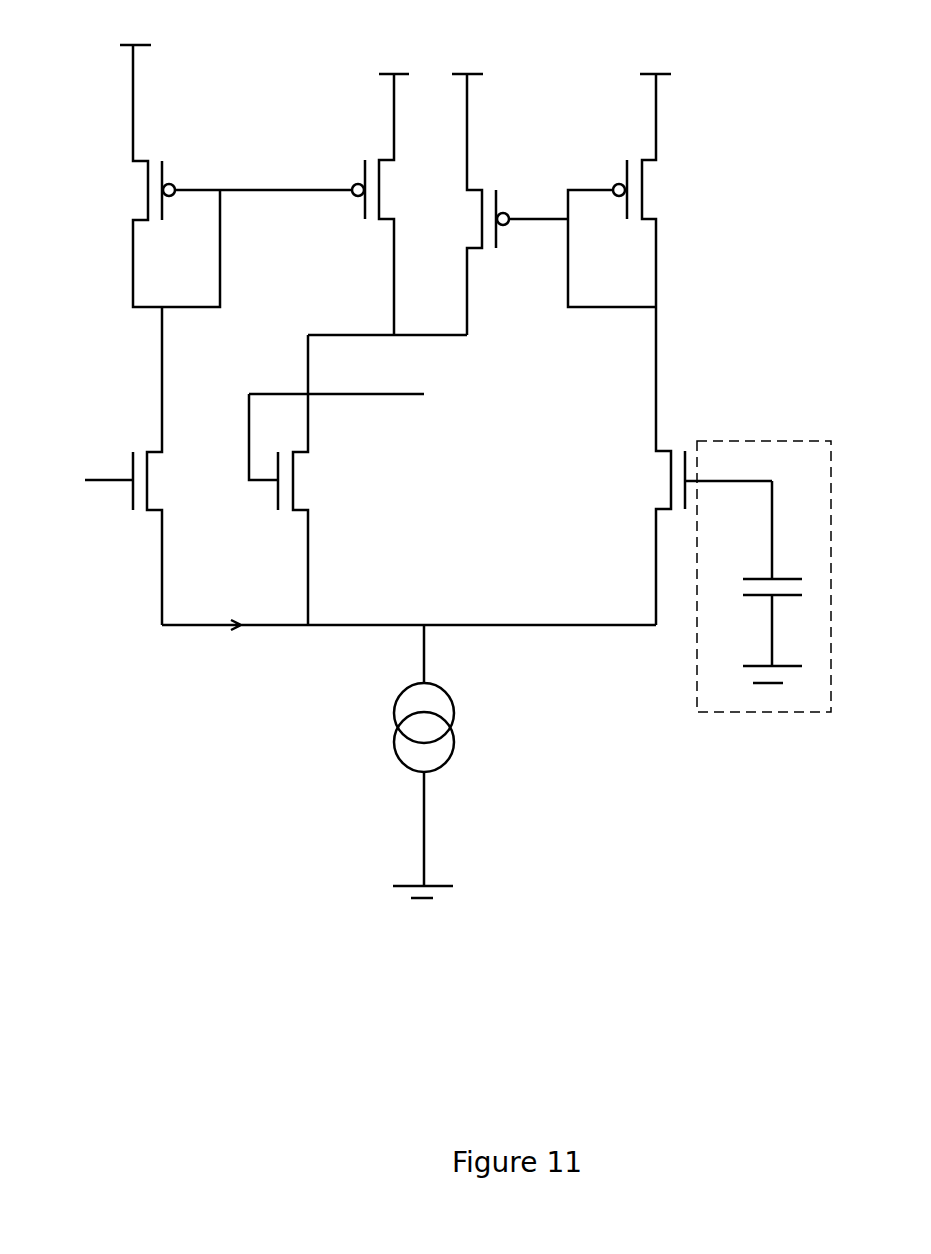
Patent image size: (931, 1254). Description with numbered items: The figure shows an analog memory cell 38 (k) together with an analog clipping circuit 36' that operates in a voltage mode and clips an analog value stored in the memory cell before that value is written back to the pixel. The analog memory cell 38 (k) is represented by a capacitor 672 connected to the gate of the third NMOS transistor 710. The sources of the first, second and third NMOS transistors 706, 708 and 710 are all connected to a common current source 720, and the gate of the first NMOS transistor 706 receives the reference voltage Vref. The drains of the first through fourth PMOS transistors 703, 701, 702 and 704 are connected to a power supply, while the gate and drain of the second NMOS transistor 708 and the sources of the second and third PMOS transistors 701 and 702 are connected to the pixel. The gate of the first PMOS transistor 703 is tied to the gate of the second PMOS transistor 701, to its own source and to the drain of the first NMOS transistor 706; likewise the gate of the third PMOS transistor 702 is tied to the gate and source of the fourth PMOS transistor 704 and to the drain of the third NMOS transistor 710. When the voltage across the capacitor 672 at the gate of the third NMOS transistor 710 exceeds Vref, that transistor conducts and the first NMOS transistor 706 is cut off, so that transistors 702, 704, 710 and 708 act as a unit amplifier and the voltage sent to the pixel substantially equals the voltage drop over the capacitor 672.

The second PMOS transistor 701 is at (379, 204).
The third PMOS transistor 702 is at (510, 204).
The first PMOS transistor 703 is at (229, 176).
The fourth PMOS transistor 704 is at (630, 190).
The first NMOS transistor 706 is at (136, 466).
The second NMOS transistor 708 is at (296, 480).
The third NMOS transistor 710 is at (696, 466).
The current source 720 is at (388, 761).
The capacitor 672 is at (754, 582).
The analog memory cell 38 is at (751, 611).
The analog clipping circuit 36' is at (453, 471).